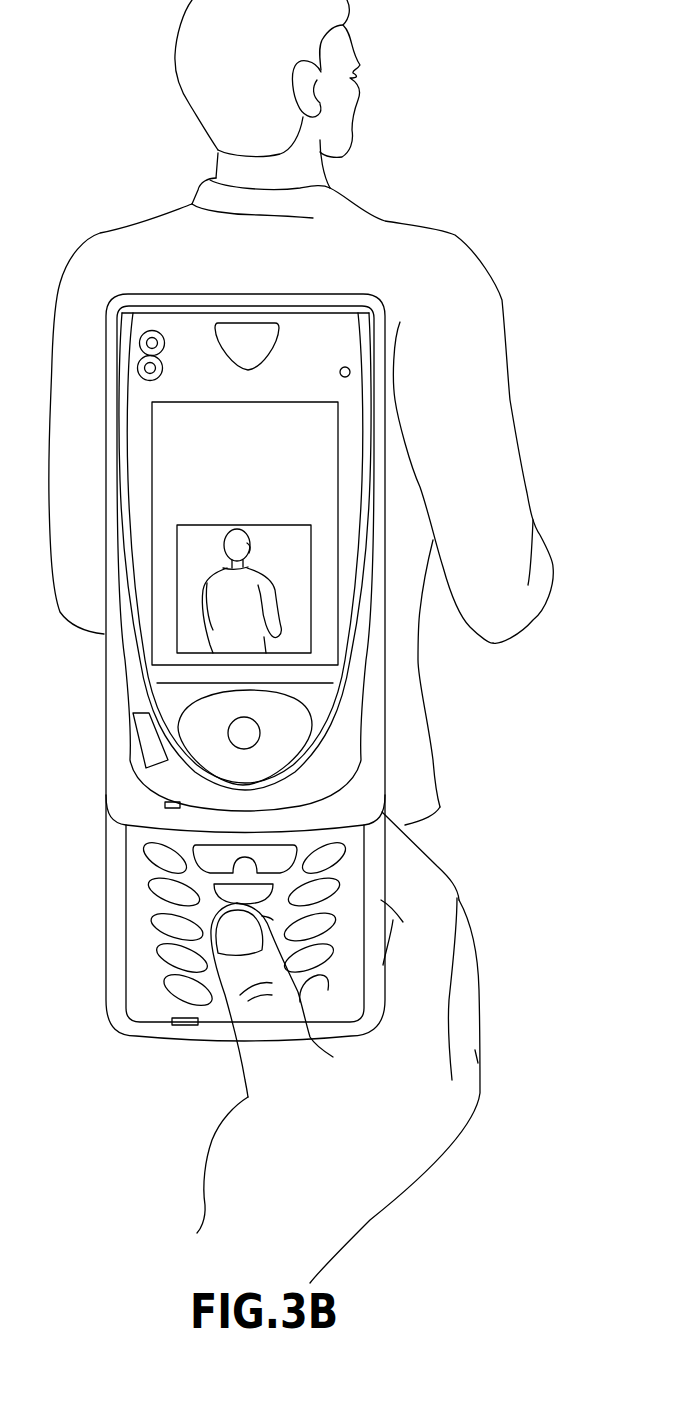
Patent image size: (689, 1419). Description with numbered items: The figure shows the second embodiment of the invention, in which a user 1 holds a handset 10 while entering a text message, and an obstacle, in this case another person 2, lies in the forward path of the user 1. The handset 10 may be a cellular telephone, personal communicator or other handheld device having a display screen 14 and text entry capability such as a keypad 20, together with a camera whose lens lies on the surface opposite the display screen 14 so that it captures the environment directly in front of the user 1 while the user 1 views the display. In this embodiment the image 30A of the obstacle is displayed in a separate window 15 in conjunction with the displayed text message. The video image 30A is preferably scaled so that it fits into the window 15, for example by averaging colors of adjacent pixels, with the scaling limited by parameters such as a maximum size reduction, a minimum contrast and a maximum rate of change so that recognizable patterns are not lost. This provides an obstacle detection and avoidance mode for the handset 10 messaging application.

The user 1 is at (432, 878).
The person 2 is at (477, 270).
The handset 10 is at (260, 667).
The display screen 14 is at (318, 658).
The window 15 is at (298, 597).
The keypad 20 is at (157, 855).
The image 30A is at (227, 602).